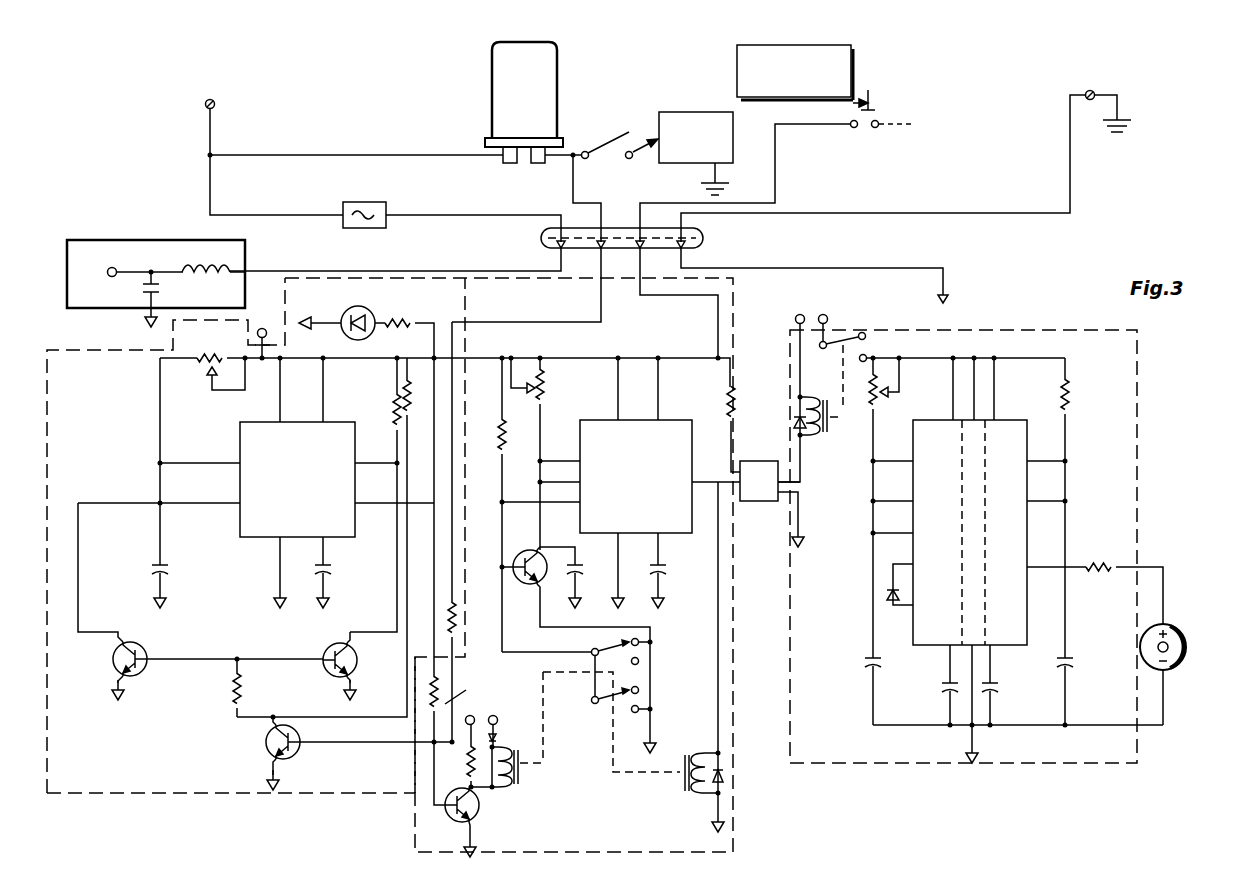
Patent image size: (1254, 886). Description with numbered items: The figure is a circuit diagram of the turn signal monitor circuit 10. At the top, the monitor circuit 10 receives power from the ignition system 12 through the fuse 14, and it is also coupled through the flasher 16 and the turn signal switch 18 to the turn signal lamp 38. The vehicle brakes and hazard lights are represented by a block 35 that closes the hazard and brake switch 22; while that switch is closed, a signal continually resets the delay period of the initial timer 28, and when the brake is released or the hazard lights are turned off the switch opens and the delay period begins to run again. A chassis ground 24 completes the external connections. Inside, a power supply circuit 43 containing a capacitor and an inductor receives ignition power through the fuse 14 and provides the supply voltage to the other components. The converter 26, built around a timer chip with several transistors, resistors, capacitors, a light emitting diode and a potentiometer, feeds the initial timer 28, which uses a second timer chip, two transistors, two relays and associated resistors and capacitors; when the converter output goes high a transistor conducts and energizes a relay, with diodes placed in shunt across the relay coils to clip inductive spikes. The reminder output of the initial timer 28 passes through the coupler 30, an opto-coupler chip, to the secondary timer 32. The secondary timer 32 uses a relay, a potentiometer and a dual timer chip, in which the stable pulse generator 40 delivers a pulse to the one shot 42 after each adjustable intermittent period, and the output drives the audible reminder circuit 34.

The turn signal monitor circuit 10 is at (1001, 270).
The ignition system 12 is at (319, 131).
The fuse 14 is at (388, 226).
The flasher 16 is at (558, 54).
The turn signal switch 18 is at (601, 180).
The hazard and brake switch 22 is at (870, 108).
The chassis ground 24 is at (1095, 92).
The converter 26 is at (203, 795).
The initial timer 28 is at (735, 828).
The coupler 30 is at (756, 461).
The secondary timer 32 is at (1060, 765).
The audible reminder circuit 34 is at (1180, 626).
The brakes and hazard lights 35 is at (853, 50).
The turn signal lamp 38 is at (710, 136).
The stable pulse generator 40 is at (950, 543).
The one shot 42 is at (985, 526).
The power supply circuit 43 is at (101, 245).